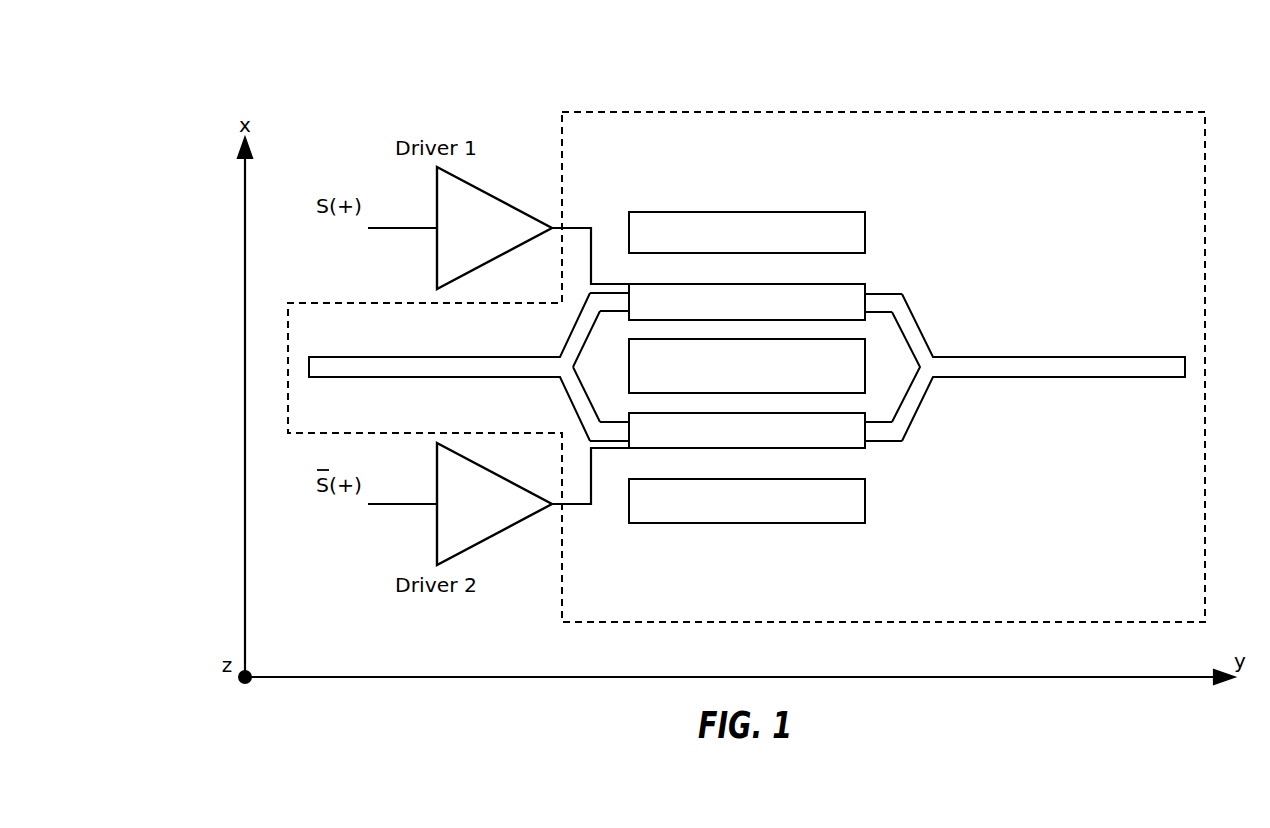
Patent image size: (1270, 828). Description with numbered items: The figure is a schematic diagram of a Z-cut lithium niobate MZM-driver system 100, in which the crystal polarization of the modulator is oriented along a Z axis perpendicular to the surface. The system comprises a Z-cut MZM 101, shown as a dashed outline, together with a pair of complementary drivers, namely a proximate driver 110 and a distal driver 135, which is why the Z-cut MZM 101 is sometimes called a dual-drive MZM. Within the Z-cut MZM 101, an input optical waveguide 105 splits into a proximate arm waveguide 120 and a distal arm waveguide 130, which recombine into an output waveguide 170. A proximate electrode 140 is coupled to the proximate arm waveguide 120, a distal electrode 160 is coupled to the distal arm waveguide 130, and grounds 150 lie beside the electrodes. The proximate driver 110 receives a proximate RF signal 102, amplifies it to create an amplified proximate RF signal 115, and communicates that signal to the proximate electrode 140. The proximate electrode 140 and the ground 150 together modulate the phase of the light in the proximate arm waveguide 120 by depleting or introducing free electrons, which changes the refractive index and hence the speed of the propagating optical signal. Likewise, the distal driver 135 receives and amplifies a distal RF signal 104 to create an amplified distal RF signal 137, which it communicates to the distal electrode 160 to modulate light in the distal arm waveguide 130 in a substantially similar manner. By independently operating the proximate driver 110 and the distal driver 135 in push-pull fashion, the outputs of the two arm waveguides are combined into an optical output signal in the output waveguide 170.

The Z-cut MZM-driver system 100 is at (230, 52).
The Z-cut MZM 101 is at (853, 111).
The proximate RF signal 102 is at (394, 227).
The distal RF signal 104 is at (394, 503).
The input optical waveguide 105 is at (407, 356).
The proximate driver 110 is at (437, 259).
The amplified proximate RF signal 115 is at (575, 228).
The proximate arm waveguide 120 is at (568, 333).
The distal arm waveguide 130 is at (568, 400).
The distal driver 135 is at (437, 536).
The amplified distal RF signal 137 is at (573, 506).
The proximate electrode 140 is at (747, 302).
The grounds 150 is at (747, 367).
The distal electrode 160 is at (747, 430).
The output waveguide 170 is at (1052, 356).